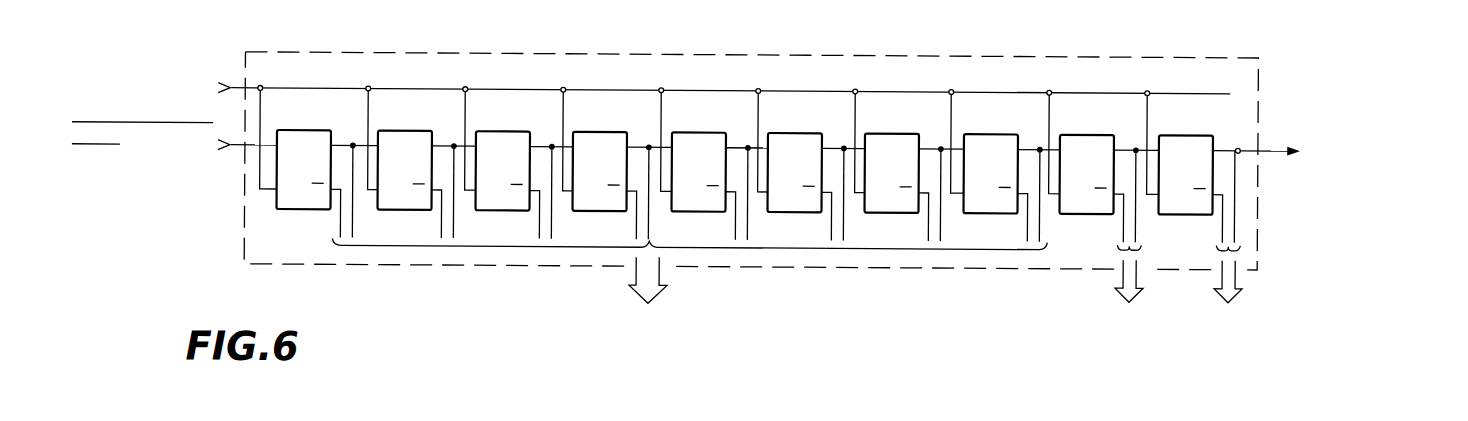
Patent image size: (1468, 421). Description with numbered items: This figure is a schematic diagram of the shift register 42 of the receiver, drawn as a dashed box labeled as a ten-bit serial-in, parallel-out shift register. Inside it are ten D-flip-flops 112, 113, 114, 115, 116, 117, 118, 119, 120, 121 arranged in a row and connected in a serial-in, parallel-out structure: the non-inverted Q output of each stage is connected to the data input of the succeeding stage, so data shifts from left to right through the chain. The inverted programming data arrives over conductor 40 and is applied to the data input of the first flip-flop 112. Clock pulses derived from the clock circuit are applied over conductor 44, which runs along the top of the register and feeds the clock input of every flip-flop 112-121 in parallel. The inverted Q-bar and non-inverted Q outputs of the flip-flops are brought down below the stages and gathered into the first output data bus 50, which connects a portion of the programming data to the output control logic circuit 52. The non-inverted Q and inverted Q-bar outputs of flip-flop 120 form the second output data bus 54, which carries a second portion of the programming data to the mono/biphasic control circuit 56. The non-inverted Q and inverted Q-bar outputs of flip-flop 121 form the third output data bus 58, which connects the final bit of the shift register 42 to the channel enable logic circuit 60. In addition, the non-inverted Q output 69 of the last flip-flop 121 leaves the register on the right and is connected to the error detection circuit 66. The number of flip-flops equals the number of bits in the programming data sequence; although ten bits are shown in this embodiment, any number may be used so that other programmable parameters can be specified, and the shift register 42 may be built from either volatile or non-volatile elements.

The conductor 40 is at (236, 150).
The shift register 42 is at (1099, 52).
The conductor 44 is at (236, 86).
The first output data bus 50 is at (661, 278).
The output control logic circuit 52 is at (665, 338).
The second output data bus 54 is at (1126, 278).
The mono/biphasic control circuit 56 is at (1059, 328).
The third output data bus 58 is at (1238, 277).
The channel enable logic circuit 60 is at (1303, 330).
The error detection circuit 66 is at (1347, 166).
The non-inverted Q output 69 is at (1224, 145).
The D-flip-flop 112 is at (307, 130).
The D-flip-flop 113 is at (408, 130).
The D-flip-flop 114 is at (506, 130).
The D-flip-flop 115 is at (603, 130).
The D-flip-flop 116 is at (702, 130).
The D-flip-flop 117 is at (798, 130).
The D-flip-flop 118 is at (895, 130).
The D-flip-flop 119 is at (994, 130).
The D-flip-flop 120 is at (1090, 130).
The D-flip-flop 121 is at (1186, 130).